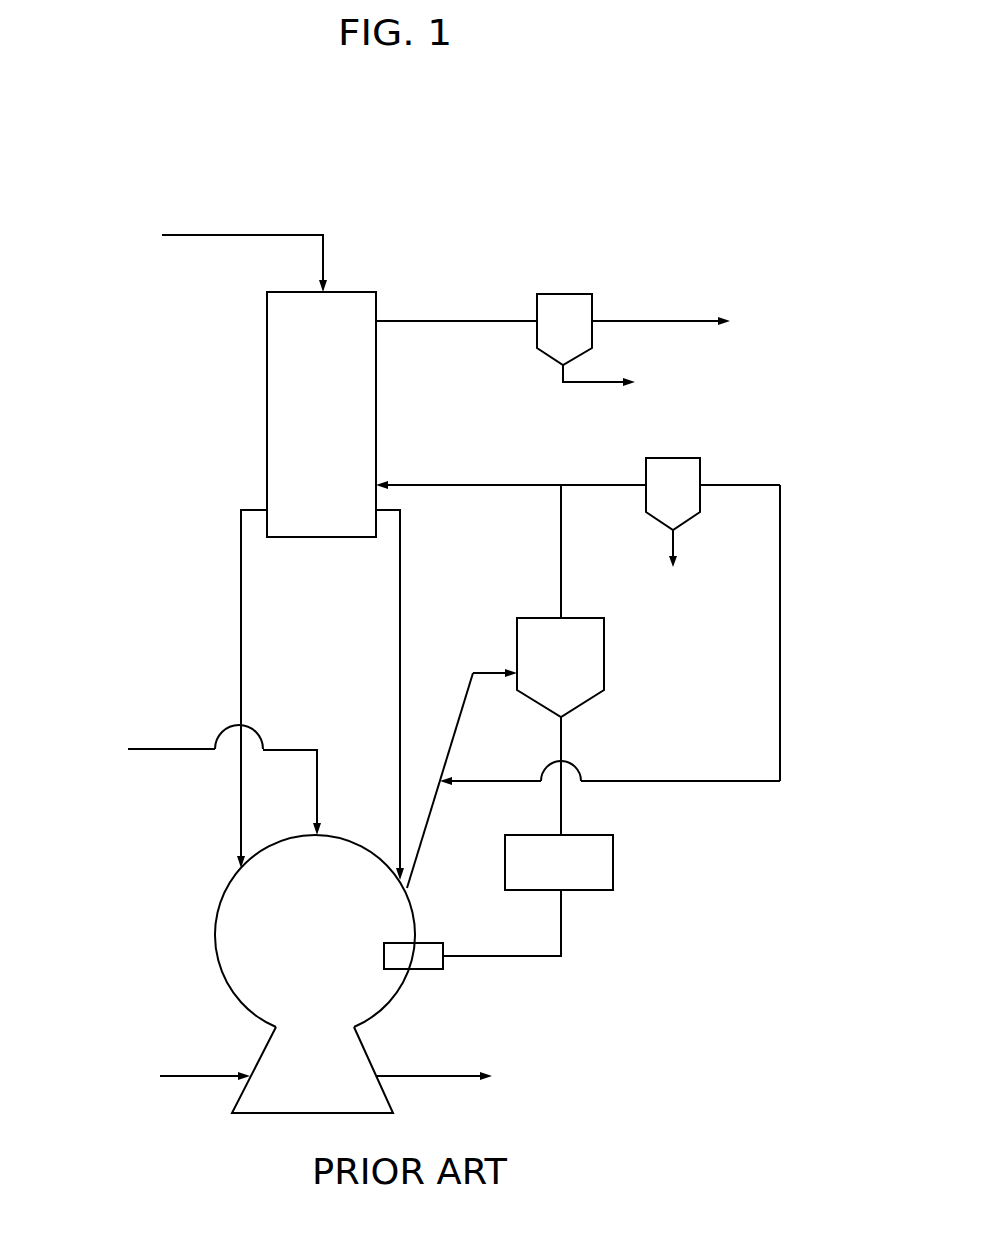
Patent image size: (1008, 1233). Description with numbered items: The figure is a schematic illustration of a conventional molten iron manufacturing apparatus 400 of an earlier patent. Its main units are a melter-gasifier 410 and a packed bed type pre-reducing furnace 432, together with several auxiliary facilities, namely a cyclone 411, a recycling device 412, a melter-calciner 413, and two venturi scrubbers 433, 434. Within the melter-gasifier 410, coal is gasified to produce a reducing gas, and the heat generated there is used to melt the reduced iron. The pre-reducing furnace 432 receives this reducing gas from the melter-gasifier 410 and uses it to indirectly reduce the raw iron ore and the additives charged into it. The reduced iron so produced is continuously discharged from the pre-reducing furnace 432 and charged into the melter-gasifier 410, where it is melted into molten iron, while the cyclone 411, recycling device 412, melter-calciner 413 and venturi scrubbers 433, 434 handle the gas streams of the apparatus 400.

The apparatus 400 is at (464, 164).
The melter-gasifier 410 is at (315, 974).
The cyclone 411 is at (560, 667).
The recycling device 412 is at (559, 862).
The melter-calciner 413 is at (423, 975).
The packed bed type pre-reducing furnace 432 is at (321, 414).
The venturi scrubber 433 is at (646, 459).
The venturi scrubber 434 is at (537, 348).